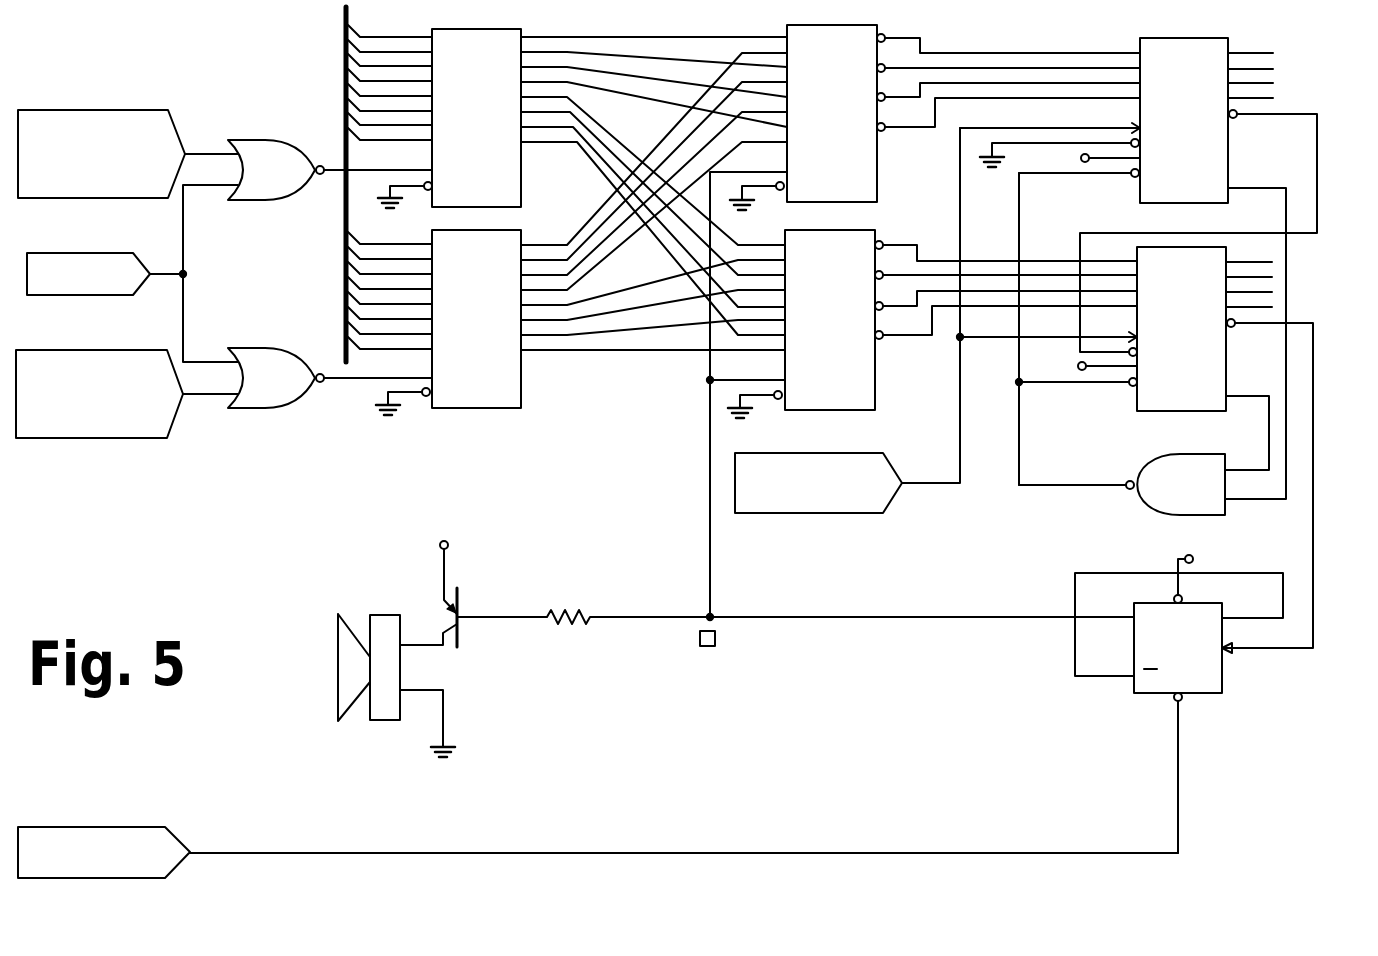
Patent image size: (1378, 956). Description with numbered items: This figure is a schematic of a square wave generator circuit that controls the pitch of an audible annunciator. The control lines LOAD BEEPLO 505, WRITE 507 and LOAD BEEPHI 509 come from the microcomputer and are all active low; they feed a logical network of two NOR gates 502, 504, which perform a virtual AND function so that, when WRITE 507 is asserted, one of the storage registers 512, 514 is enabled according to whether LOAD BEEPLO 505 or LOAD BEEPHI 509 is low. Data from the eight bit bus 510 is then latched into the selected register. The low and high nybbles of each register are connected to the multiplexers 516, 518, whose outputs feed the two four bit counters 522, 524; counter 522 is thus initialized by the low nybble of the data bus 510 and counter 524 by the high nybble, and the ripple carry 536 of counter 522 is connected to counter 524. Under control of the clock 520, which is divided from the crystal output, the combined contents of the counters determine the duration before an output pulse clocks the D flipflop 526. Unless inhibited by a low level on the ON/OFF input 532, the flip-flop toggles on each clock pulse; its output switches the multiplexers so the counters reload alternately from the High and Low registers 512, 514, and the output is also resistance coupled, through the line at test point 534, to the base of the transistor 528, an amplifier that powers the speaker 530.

The NOR gate 502 is at (270, 177).
The NOR gate 504 is at (277, 370).
The LOAD BEEPLO line 505 is at (191, 149).
The WRITE line 507 is at (80, 256).
The LOAD BEEPHI line 509 is at (152, 375).
The eight bit bus 510 is at (335, 43).
The storage register 512 is at (498, 165).
The storage register 514 is at (497, 375).
The multiplexer 516 is at (838, 155).
The multiplexer 518 is at (838, 350).
The clock 520 is at (902, 492).
The four bit counter 522 is at (1197, 102).
The four bit counter 524 is at (1197, 308).
The D flipflop 526 is at (1162, 643).
The transistor 528 is at (465, 608).
The speaker 530 is at (385, 638).
The ON/OFF input 532 is at (173, 847).
The test point line 534 is at (703, 402).
The ripple carry 536 is at (1236, 118).